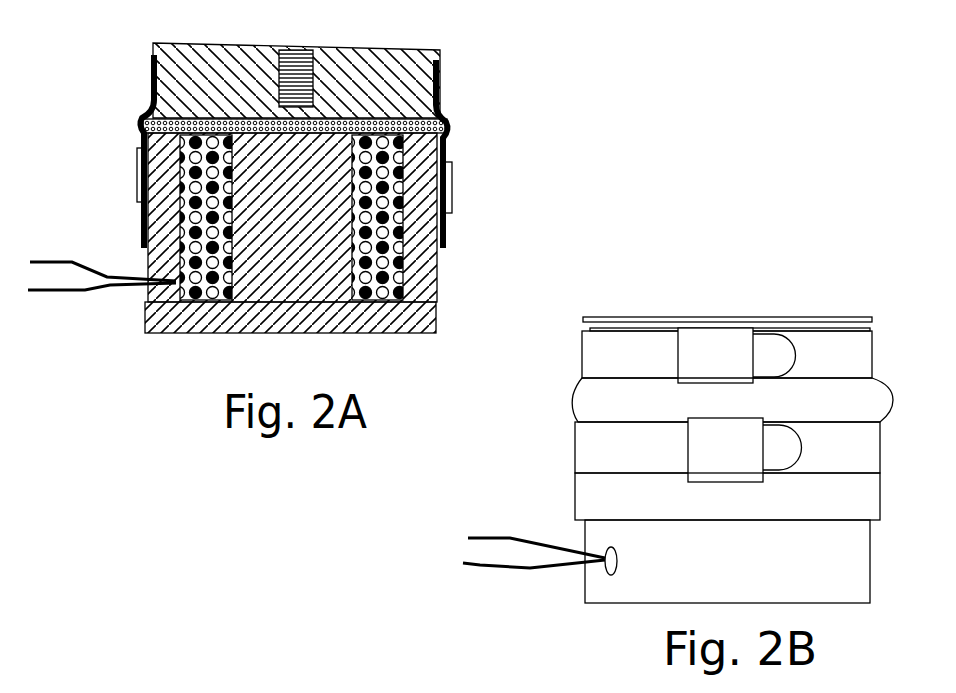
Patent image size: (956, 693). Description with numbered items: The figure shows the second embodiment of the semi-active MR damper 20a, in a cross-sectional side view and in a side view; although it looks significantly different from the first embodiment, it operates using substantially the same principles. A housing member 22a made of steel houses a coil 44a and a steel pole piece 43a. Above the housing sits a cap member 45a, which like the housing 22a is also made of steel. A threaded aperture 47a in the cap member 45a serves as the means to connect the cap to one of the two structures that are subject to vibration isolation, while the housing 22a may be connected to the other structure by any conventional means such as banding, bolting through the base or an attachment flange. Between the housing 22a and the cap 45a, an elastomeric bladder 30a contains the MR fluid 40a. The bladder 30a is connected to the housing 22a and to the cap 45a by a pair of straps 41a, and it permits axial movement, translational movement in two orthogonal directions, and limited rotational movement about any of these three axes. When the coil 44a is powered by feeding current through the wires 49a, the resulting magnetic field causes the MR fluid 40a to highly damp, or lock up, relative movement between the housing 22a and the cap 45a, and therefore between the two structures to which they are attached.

In FIG. 2A, the semi-active MR damper 20a is at (302, 186).
In FIG. 2B, the semi-active MR damper 20a is at (678, 428).
In FIG. 2A, the housing member 22a is at (430, 178).
In FIG. 2A, the elastomeric bladder 30a is at (137, 131).
In FIG. 2B, the elastomeric bladder 30a is at (590, 498).
In FIG. 2A, the fluid 40a is at (148, 112).
In FIG. 2B, the straps 41a is at (580, 441).
In FIG. 2A, the steel pole piece 43a is at (318, 280).
In FIG. 2A, the coil 44a is at (400, 273).
In FIG. 2A, the cap member 45a is at (415, 80).
In FIG. 2A, the threaded aperture 47a is at (293, 50).
In FIG. 2A, the wires 49a is at (50, 290).